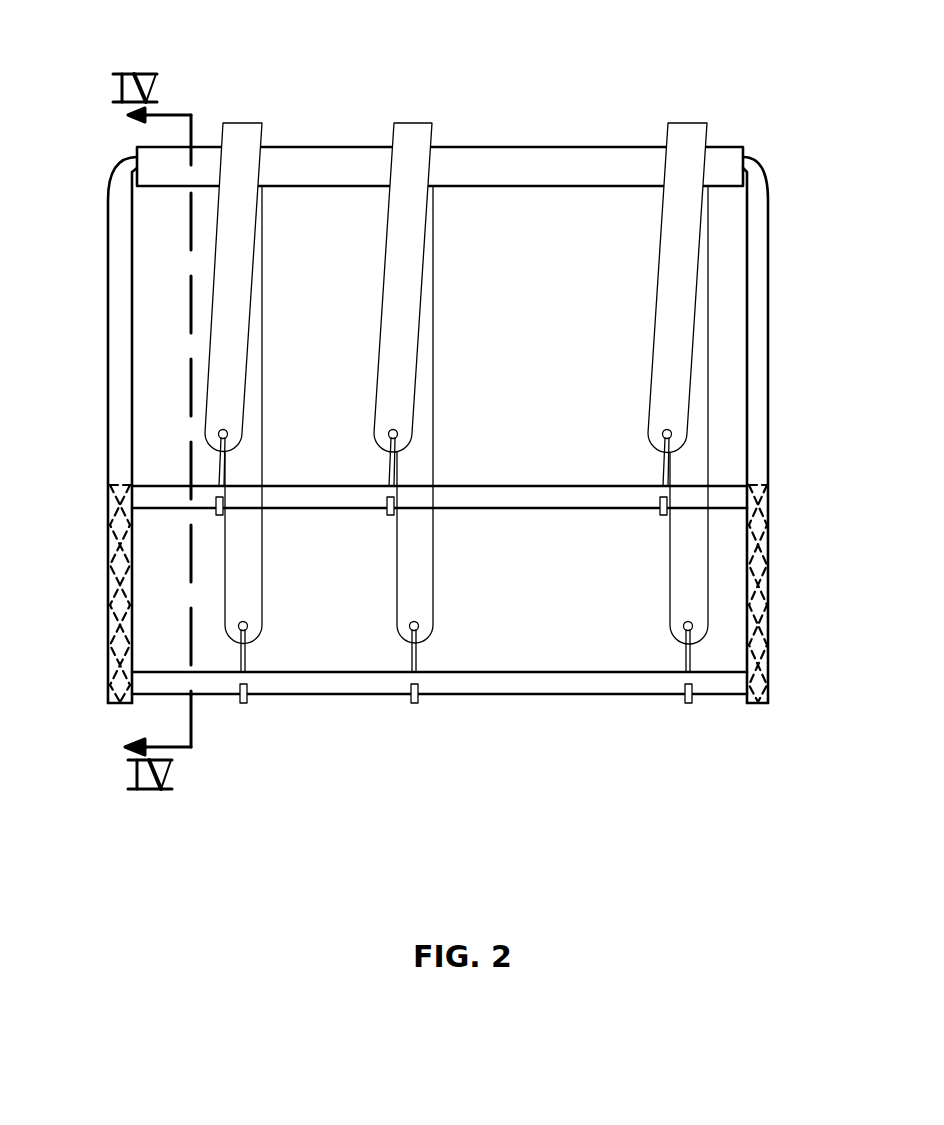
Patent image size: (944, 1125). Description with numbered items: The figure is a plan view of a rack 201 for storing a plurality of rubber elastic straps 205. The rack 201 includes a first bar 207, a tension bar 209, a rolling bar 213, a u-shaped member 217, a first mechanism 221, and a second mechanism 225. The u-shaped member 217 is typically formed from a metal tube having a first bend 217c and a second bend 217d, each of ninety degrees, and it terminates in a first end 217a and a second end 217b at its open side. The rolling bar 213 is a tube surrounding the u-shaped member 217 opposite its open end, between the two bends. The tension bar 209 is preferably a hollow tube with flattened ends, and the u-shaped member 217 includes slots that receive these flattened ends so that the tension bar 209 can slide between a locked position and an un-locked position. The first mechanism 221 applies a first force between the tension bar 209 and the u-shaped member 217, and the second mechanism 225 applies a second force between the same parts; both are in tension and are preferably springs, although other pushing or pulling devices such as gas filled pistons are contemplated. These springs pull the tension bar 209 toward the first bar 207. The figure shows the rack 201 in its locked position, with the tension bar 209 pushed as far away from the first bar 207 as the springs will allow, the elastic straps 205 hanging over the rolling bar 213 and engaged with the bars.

The rack 201 is at (457, 401).
The elastic straps 205 is at (440, 401).
The first bar 207 is at (315, 672).
The tension bar 209 is at (532, 486).
The rolling bar 213 is at (535, 147).
The u-shaped member 217 is at (457, 431).
The first end 217a is at (103, 728).
The second end 217b is at (733, 728).
The first bend 217c is at (105, 138).
The second bend 217d is at (788, 145).
The first mechanism 221 is at (120, 600).
The second mechanism 225 is at (755, 530).